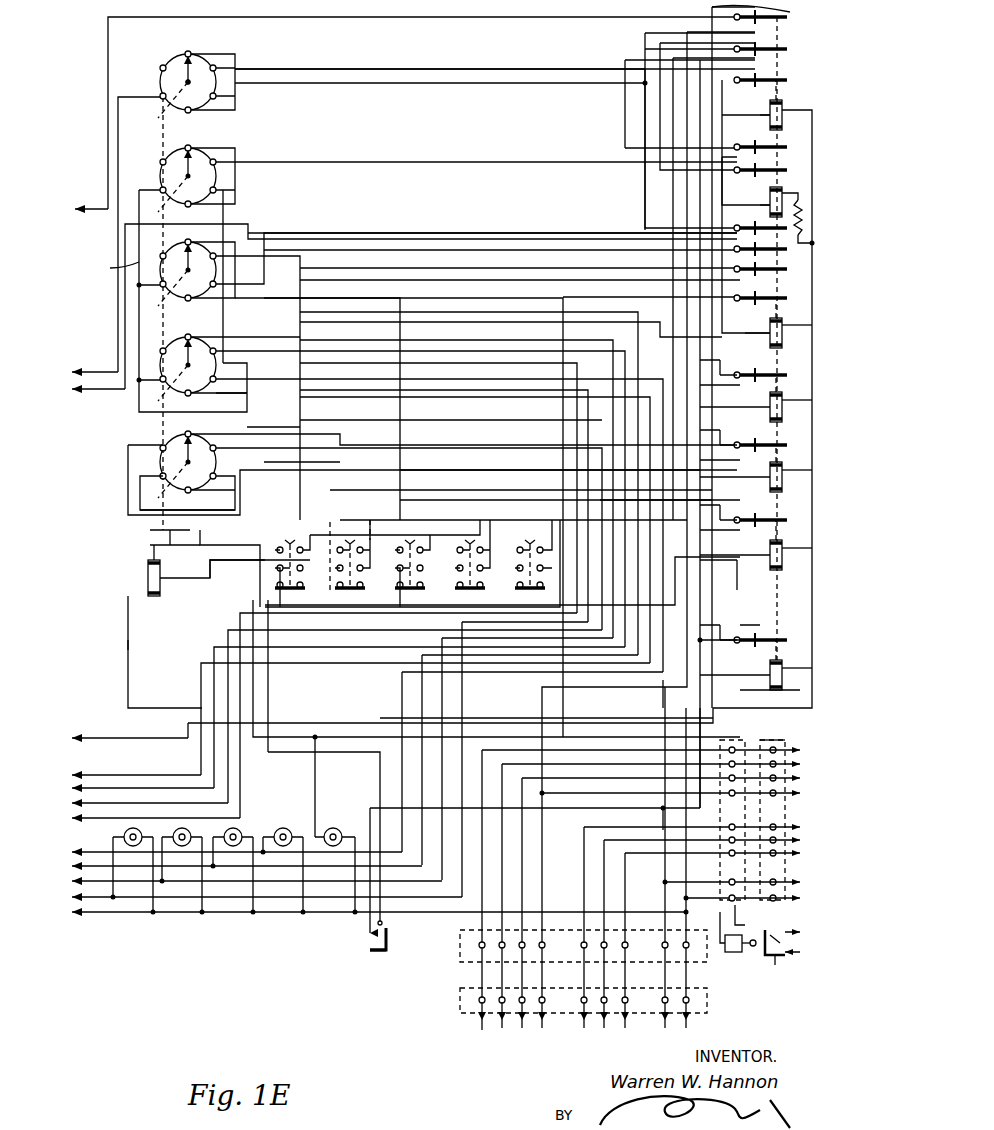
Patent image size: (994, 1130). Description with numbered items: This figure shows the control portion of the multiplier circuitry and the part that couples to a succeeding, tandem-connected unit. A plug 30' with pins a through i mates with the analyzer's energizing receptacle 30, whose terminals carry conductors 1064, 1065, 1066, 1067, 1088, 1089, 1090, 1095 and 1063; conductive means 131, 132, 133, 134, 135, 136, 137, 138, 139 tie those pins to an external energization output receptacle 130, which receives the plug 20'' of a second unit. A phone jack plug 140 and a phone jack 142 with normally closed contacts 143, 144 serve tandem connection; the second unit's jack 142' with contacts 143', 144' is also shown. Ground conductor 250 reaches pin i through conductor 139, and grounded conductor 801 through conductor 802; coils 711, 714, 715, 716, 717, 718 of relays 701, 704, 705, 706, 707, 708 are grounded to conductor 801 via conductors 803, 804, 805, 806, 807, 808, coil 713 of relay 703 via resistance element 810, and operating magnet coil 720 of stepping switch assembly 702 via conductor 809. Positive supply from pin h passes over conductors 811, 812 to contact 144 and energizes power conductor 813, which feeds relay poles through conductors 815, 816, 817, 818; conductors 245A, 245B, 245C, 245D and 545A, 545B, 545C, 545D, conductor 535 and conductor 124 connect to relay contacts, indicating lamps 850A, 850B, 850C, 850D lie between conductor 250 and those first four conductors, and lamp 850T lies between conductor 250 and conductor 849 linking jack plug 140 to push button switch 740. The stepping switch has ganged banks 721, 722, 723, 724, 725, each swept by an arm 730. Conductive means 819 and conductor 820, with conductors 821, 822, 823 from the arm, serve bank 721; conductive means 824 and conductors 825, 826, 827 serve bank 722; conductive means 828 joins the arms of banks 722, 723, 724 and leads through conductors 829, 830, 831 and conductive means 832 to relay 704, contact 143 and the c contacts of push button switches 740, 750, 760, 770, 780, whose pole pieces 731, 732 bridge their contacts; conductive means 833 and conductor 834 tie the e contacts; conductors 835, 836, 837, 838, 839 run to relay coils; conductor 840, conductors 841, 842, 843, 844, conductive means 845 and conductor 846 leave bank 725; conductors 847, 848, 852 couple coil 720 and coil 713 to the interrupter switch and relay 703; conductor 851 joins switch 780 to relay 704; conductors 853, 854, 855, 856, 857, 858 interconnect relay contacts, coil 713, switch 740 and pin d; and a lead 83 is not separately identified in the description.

The switch bank 721 is at (180, 55).
The switch bank 722 is at (180, 150).
The switch bank 723 is at (180, 246).
The switch bank 724 is at (180, 341).
The switch bank 725 is at (180, 438).
The contact arm 730 is at (178, 83).
The relay 701 is at (790, 108).
The relay 703 is at (782, 186).
The relay 704 is at (791, 323).
The relay 705 is at (791, 397).
The relay 706 is at (791, 467).
The relay 707 is at (791, 544).
The relay 708 is at (791, 664).
The relay coil 711 is at (755, 115).
The relay coil 713 is at (756, 206).
The relay coil 714 is at (757, 334).
The relay coil 715 is at (735, 409).
The relay coil 716 is at (735, 479).
The relay coil 717 is at (735, 557).
The relay coil 718 is at (735, 676).
The stepping switch assembly 702 is at (145, 571).
The operating magnet coil 720 is at (165, 592).
The first shiftable pole piece 731 is at (237, 569).
The shiftable pole piece 732 is at (412, 563).
The push button switch 740 is at (286, 571).
The push button switch 750 is at (353, 561).
The push button switch 760 is at (406, 571).
The push button switch 770 is at (473, 561).
The push button switch 780 is at (533, 561).
The grounded conductor 801 is at (158, 706).
The conductor 802 is at (701, 761).
The conductor 803 is at (800, 110).
The conductor 804 is at (797, 340).
The conductor 805 is at (797, 415).
The conductor 806 is at (797, 485).
The conductor 807 is at (797, 563).
The conductor 808 is at (797, 683).
The conductor 809 is at (135, 640).
The resistance element 810 is at (806, 232).
The conductor 811 is at (660, 814).
The conductor 812 is at (371, 808).
The power conductor 813 is at (655, 700).
The conductor 815 is at (719, 358).
The conductor 816 is at (719, 428).
The conductor 817 is at (719, 503).
The conductor 818 is at (741, 624).
The conductive means 819 is at (237, 96).
The conductor 820 is at (430, 69).
The conductor 821 is at (455, 83).
The conductor 822 is at (630, 39).
The conductor 823 is at (644, 174).
The conductive means 824 is at (237, 176).
The conductor 825 is at (445, 162).
The conductor 826 is at (628, 96).
The conductor 827 is at (625, 148).
The conductive means 828 is at (223, 218).
The conductor 829 is at (545, 250).
The conductor 830 is at (645, 268).
The conductor 831 is at (389, 905).
The conductive means 832 is at (513, 549).
The conductive means 833 is at (112, 268).
The conductor 834 is at (200, 412).
The conductor 835 is at (477, 388).
The conductor 836 is at (529, 474).
The conductor 837 is at (520, 480).
The conductor 838 is at (444, 498).
The conductor 839 is at (550, 544).
The conductor 840 is at (442, 476).
The conductor 841 is at (451, 525).
The conductor 842 is at (368, 470).
The conductor 843 is at (521, 481).
The conductor 844 is at (480, 500).
The conductive means 845 is at (128, 470).
The conductor 846 is at (187, 511).
The conductor 847 is at (230, 568).
The conductor 848 is at (486, 407).
The conductor 849 is at (492, 727).
The conductor 851 is at (475, 486).
The conductor 852 is at (273, 278).
The conductor 853 is at (632, 122).
The conductor 854 is at (714, 289).
The conductor 855 is at (746, 181).
The conductor 856 is at (746, 206).
The conductor 857 is at (400, 298).
The conductor 858 is at (648, 412).
The indicating lamp 850A is at (141, 866).
The indicating lamp 850B is at (191, 866).
The indicating lamp 850C is at (252, 832).
The indicating lamp 850D is at (290, 826).
The fifth indicating lamp 850T is at (336, 826).
The conductor 545A is at (128, 818).
The conductor 545B is at (128, 803).
The conductor 545C is at (128, 788).
The conductor 545D is at (122, 775).
The conductor 535 is at (108, 734).
The conductor 245A is at (394, 643).
The conductor 245B is at (394, 672).
The conductor 245C is at (395, 702).
The conductor 245D is at (395, 754).
The ground conductor 250 is at (100, 912).
The conductor 124 is at (262, 224).
The conductor 83 is at (486, 263).
The external energization output receptacle 130 is at (728, 740).
The connector plug 20'' is at (785, 728).
The receptacle 30 is at (566, 1000).
The plug 30' is at (563, 955).
The conductive means 131 is at (571, 752).
The conductive means 132 is at (577, 768).
The conductive means 133 is at (584, 783).
The conductive means 134 is at (547, 860).
The conductive means 135 is at (658, 914).
The conductive means 136 is at (668, 926).
The conductive means 137 is at (678, 936).
The conductive means 138 is at (658, 900).
The conductive means 139 is at (708, 864).
The phone jack plug 140 is at (730, 954).
The phone jack 142 is at (395, 935).
The contact 143 is at (358, 948).
The contact 144 is at (354, 931).
The phone jack 142' is at (788, 966).
The contact 143' is at (780, 932).
The contact 144' is at (798, 942).
The conductor 1063 is at (690, 1028).
The conductor 1064 is at (478, 1028).
The conductor 1065 is at (493, 1034).
The conductor 1066 is at (527, 1034).
The conductor 1067 is at (545, 1032).
The conductor 1088 is at (577, 1032).
The conductor 1089 is at (610, 1036).
The conductor 1090 is at (640, 1031).
The conductor 1095 is at (670, 1036).